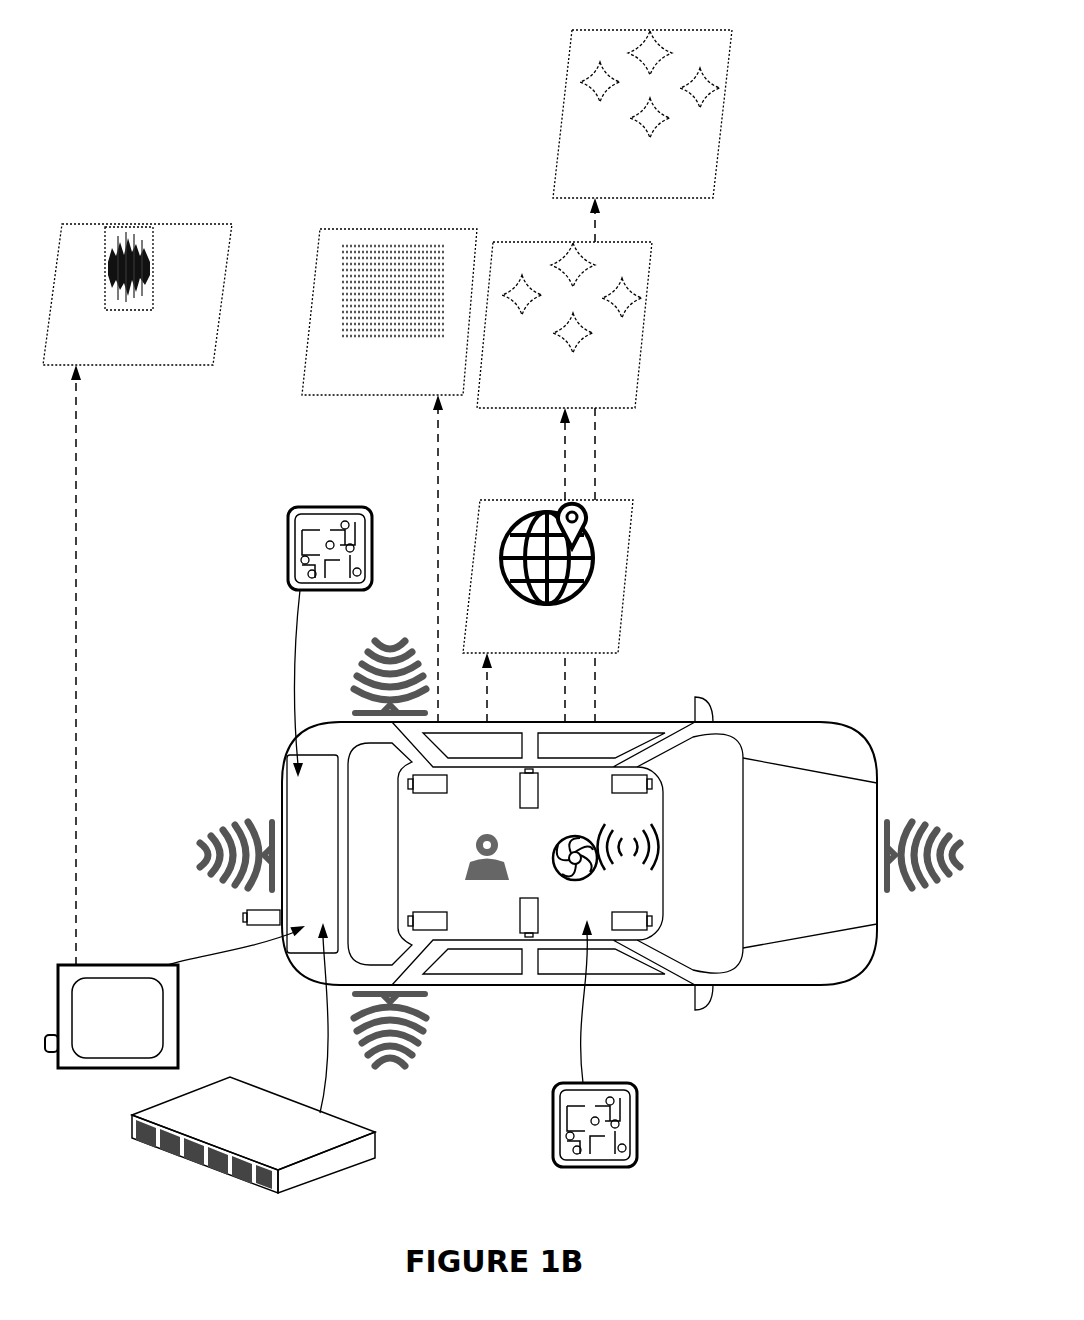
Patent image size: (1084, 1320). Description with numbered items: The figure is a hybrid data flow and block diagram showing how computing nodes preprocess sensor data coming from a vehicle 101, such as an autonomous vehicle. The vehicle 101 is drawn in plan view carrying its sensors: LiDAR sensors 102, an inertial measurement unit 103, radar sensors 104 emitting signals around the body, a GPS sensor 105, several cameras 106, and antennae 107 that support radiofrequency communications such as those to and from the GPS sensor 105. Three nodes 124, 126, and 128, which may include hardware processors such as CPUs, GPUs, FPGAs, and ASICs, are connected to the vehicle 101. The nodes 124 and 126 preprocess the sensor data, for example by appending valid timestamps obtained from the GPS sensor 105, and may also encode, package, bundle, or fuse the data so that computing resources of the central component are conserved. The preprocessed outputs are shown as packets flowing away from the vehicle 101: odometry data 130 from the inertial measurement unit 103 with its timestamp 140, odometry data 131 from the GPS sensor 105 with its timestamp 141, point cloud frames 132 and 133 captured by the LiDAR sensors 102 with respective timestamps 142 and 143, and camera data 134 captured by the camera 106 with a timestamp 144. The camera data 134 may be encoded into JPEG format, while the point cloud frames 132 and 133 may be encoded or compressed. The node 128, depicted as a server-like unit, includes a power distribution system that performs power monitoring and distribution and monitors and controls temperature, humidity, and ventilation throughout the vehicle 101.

The vehicle 101 is at (793, 805).
The LiDAR sensors 102 is at (575, 882).
The inertial measurement unit (IMU) 103 is at (135, 1027).
The radar sensors 104 is at (375, 658).
The GPS sensor 105 is at (545, 859).
The cameras 106 is at (528, 770).
The antennae 107 is at (703, 835).
The node 124 is at (320, 505).
The node 126 is at (637, 1120).
The node 128 is at (380, 1145).
The odometry data 130 is at (153, 262).
The odometry data 131 is at (594, 563).
The point cloud frame 132 is at (669, 103).
The point cloud frame 133 is at (592, 316).
The camera data 134 is at (342, 298).
The timestamp 140 is at (173, 345).
The timestamp 141 is at (476, 614).
The timestamp 142 is at (583, 160).
The timestamp 143 is at (500, 380).
The timestamp 144 is at (342, 364).